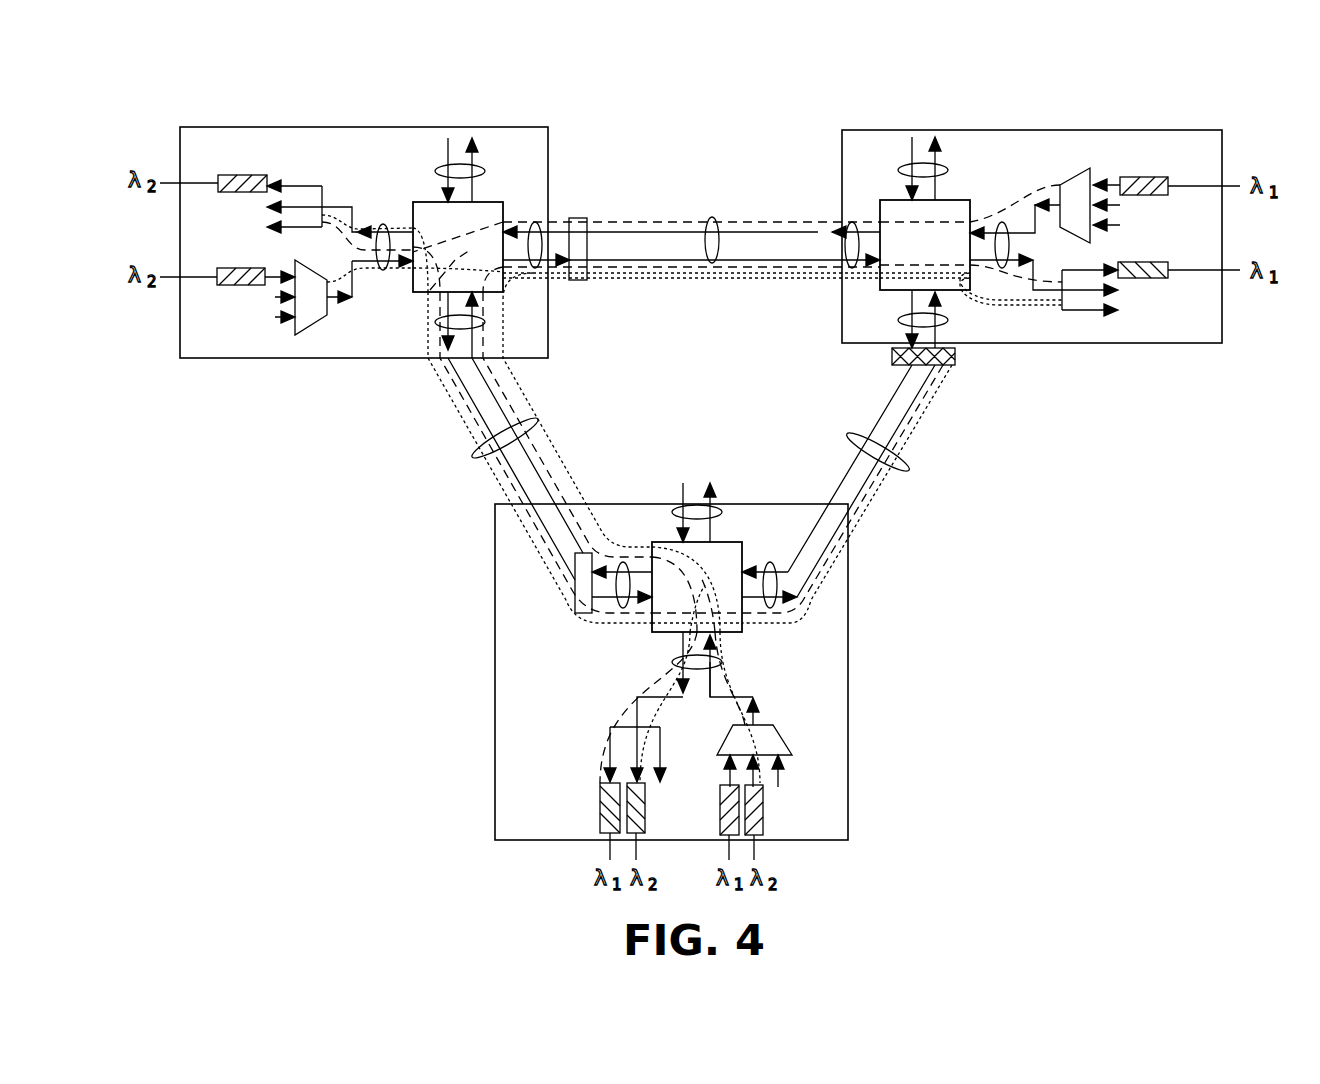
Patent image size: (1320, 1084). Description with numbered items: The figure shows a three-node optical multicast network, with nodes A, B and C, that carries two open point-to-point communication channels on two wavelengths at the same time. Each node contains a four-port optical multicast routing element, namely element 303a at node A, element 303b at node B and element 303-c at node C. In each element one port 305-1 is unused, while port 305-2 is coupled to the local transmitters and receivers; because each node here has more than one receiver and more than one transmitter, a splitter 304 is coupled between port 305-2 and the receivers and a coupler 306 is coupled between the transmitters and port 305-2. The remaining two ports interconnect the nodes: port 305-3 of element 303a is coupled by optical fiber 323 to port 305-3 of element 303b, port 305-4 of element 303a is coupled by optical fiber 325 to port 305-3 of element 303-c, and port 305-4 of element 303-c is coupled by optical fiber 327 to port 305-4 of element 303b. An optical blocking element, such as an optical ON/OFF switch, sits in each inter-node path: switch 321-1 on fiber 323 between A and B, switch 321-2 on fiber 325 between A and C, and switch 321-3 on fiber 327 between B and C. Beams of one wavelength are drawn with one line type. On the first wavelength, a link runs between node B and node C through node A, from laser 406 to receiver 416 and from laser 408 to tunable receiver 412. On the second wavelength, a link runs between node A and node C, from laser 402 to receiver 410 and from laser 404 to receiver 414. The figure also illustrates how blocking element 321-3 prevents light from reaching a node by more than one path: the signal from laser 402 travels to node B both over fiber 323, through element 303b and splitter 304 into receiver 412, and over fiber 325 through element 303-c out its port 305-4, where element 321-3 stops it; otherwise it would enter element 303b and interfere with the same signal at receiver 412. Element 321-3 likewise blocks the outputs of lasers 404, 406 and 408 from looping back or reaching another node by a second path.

The optical multicast routing element 303a is at (503, 208).
The optical multicast routing element 303b is at (965, 290).
The optical multicast routing element 303-c is at (742, 562).
The splitter 304 is at (313, 186).
The coupler 306 is at (312, 330).
The port 305-1 is at (454, 163).
The port 305-2 is at (383, 224).
The port 305-3 is at (535, 268).
The port 305-4 is at (435, 320).
The optical ON/OFF switch 321-1 is at (587, 246).
The optical ON/OFF switch 321-2 is at (577, 600).
The optical ON/OFF switch 321-3 is at (892, 360).
The optical fiber 323 is at (712, 218).
The optical fiber 325 is at (470, 455).
The optical fiber 327 is at (908, 465).
The laser 402 is at (250, 268).
The receiver 414 is at (258, 175).
The laser 406 is at (1158, 177).
The tunable receiver 412 is at (1158, 262).
The laser 408 is at (720, 800).
The laser 404 is at (765, 815).
The receiver 416 is at (598, 803).
The receiver 410 is at (645, 820).